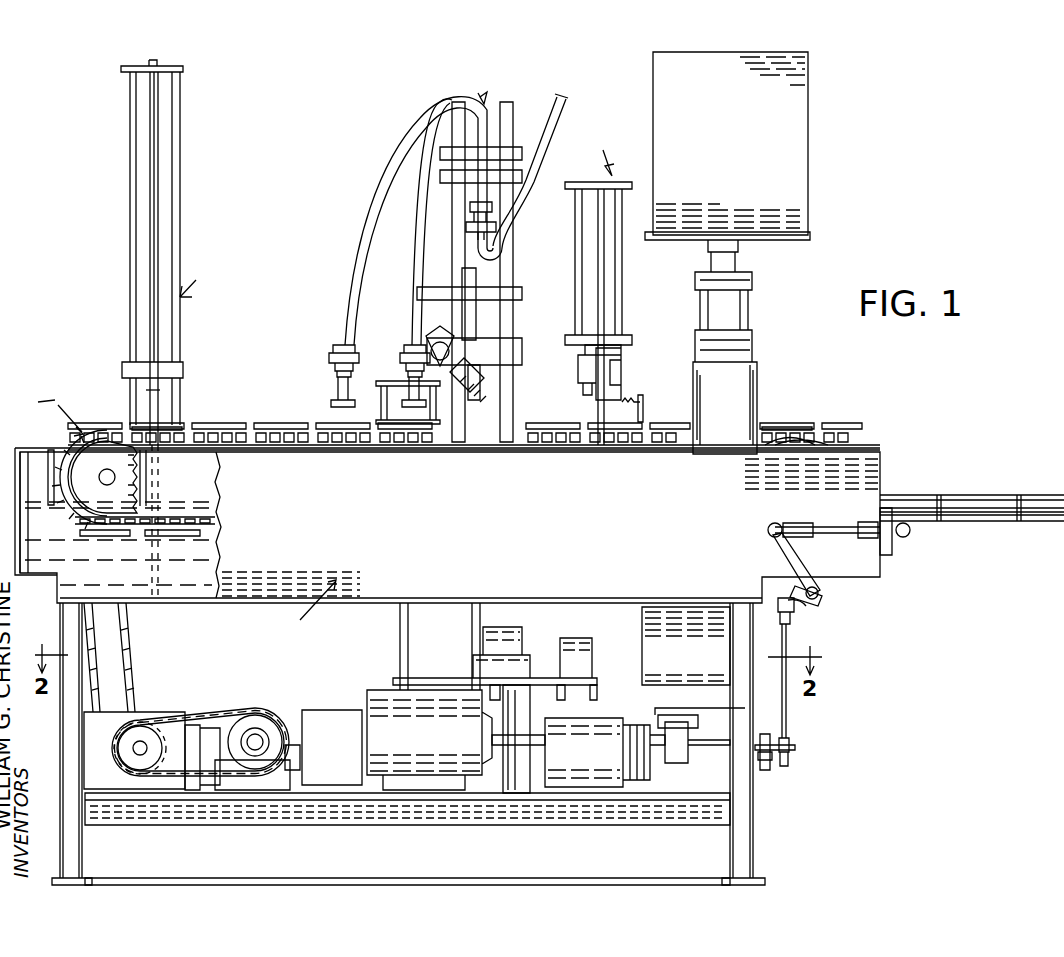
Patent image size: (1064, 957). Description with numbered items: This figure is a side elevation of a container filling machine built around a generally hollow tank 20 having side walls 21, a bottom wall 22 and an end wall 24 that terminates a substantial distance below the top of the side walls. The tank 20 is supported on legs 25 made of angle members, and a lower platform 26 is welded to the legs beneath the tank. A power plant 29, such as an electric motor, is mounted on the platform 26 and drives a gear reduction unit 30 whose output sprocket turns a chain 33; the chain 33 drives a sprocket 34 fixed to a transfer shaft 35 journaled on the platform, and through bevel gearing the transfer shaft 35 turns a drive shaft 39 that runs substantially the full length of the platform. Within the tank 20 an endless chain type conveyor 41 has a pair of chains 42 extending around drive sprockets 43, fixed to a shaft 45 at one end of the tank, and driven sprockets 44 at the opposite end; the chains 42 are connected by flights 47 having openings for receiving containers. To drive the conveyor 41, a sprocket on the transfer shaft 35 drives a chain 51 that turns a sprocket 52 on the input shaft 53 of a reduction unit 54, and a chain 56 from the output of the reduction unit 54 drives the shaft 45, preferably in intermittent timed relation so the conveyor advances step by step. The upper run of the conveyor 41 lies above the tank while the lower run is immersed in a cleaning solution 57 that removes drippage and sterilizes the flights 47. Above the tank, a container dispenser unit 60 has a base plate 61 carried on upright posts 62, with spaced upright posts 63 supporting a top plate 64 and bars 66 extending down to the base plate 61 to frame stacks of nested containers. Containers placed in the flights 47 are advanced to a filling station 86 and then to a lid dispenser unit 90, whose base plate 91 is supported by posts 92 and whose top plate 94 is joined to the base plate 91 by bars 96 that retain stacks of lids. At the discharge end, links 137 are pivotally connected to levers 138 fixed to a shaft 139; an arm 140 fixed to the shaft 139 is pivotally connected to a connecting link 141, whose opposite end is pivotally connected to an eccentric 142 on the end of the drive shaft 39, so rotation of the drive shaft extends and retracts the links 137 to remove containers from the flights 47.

The tank 20 is at (300, 620).
The side walls 21 is at (376, 600).
The bottom wall 22 is at (190, 600).
The end wall 24 is at (882, 565).
The legs 25 is at (62, 720).
The platform 26 is at (305, 795).
The power plant 29 is at (380, 692).
The gear reduction unit 30 is at (324, 712).
The chain 33 is at (286, 714).
The sprocket 34 is at (292, 742).
The transfer shaft 35 is at (255, 756).
The drive shaft 39 is at (702, 748).
The endless chain type conveyor 41 is at (126, 467).
The chains 42 is at (252, 424).
The drive sprockets 43 is at (145, 470).
The driven sprockets 44 is at (800, 447).
The shaft 45 is at (112, 478).
The flights 47 is at (186, 424).
The chain 51 is at (222, 712).
The sprocket 52 is at (144, 775).
The input shaft 53 is at (136, 752).
The reduction unit 54 is at (96, 742).
The chain 56 is at (135, 662).
The cleaning solution 57 is at (205, 553).
The container dispenser unit 60 is at (164, 240).
The base plate 61 is at (180, 368).
The upright posts 62 is at (150, 392).
The upright posts 63 is at (152, 258).
The top plate 64 is at (172, 70).
The bars 66 is at (181, 220).
The filling station 86 is at (484, 98).
The lid dispenser unit 90 is at (603, 286).
The base plate 91 is at (626, 342).
The posts 92 is at (607, 377).
The top plate 94 is at (584, 182).
The bars 96 is at (612, 268).
The links 137 is at (838, 516).
The levers 138 is at (781, 550).
The shaft 139 is at (826, 594).
The arm 140 is at (802, 612).
The connecting link 141 is at (788, 707).
The eccentric 142 is at (792, 744).